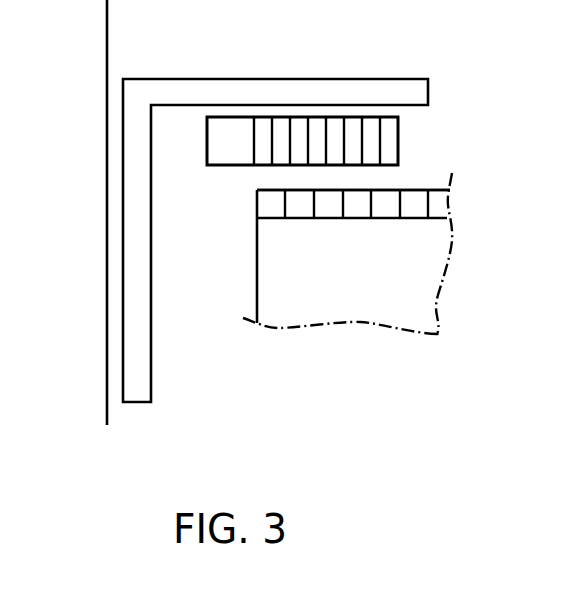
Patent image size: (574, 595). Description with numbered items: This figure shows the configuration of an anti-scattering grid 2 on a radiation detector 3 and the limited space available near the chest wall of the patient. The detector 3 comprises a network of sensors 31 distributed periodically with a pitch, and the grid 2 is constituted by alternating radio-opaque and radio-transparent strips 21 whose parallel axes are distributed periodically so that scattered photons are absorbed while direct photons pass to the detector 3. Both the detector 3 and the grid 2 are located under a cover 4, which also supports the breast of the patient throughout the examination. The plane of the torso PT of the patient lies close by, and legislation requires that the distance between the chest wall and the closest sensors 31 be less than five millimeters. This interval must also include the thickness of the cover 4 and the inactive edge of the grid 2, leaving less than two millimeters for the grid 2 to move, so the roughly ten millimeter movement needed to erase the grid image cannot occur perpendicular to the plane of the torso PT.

The plane of the torso PT is at (107, 45).
The cover 4 is at (389, 78).
The strips 21 is at (399, 138).
The anti-scattering grid 2 is at (224, 181).
The radiation detector 3 is at (364, 278).
The sensors 31 is at (447, 207).